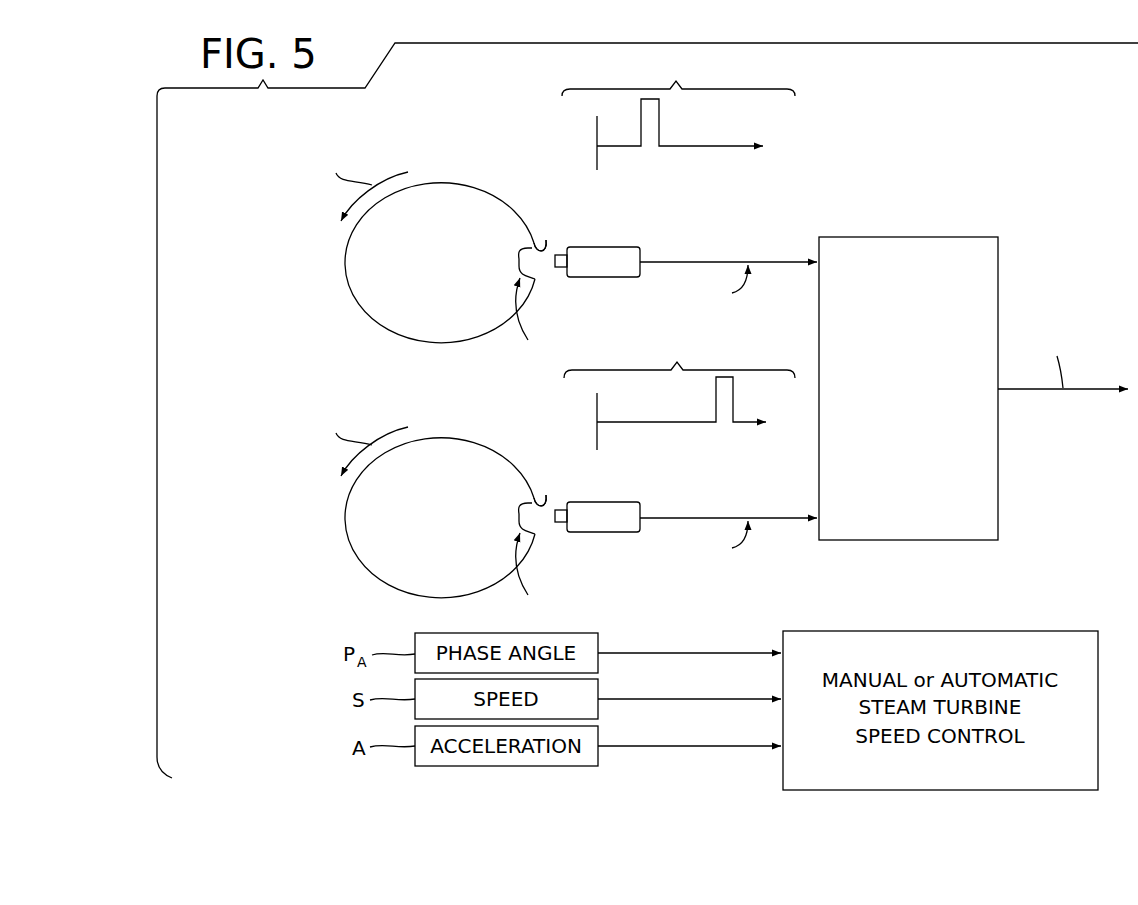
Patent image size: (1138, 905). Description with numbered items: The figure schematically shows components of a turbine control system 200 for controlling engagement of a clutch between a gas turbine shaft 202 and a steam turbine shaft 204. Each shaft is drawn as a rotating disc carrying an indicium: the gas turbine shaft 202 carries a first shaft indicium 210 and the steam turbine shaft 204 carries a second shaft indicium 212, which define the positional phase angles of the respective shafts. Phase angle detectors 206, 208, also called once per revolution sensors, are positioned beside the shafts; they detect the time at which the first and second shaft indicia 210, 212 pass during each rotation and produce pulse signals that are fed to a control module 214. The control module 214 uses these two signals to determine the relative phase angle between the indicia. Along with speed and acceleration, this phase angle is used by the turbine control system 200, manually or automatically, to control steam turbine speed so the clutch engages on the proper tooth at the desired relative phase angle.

The turbine control system 200 is at (984, 156).
The gas turbine shaft 202 is at (424, 528).
The steam turbine shaft 204 is at (424, 273).
The phase angle detector 206 is at (608, 513).
The phase angle detector 208 is at (608, 258).
The first shaft indicium 210 is at (545, 497).
The second shaft indicium 212 is at (545, 242).
The control module 214 is at (893, 395).